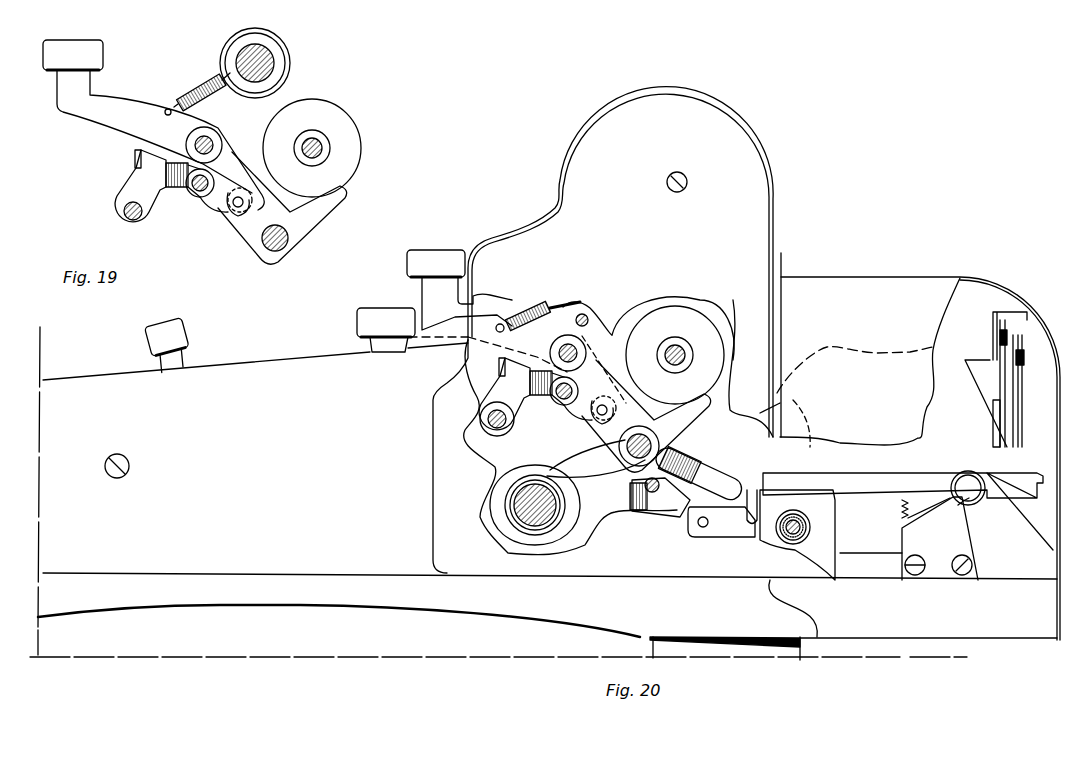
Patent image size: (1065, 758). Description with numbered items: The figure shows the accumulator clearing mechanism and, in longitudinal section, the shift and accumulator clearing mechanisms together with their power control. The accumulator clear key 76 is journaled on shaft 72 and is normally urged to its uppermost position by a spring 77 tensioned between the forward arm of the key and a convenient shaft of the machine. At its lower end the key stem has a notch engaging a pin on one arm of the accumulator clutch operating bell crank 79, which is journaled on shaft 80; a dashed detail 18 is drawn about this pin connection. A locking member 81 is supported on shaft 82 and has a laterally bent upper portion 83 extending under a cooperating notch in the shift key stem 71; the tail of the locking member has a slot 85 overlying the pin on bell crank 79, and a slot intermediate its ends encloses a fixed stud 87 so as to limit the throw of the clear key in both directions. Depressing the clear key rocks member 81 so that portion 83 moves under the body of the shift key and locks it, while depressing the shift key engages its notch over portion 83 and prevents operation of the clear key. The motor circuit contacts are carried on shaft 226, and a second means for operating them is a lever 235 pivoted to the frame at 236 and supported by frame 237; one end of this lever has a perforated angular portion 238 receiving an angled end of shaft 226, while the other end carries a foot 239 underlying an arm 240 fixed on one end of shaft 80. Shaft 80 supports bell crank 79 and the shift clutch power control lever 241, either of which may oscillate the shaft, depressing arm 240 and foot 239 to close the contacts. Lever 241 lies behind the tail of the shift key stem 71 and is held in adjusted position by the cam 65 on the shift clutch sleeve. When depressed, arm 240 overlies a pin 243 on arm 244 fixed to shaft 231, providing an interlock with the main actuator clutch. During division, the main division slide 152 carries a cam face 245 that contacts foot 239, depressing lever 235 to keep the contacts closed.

In FIG. 19, the accumulator clear key 76 is at (118, 106).
In FIG. 20, the accumulator clear key 76 is at (446, 305).
In FIG. 19, the spring 77 is at (192, 86).
In FIG. 19, the shaft 72 is at (215, 140).
In FIG. 19, the laterally bent upper portion 83 is at (134, 163).
In FIG. 19, the locking member 81 is at (128, 190).
In FIG. 20, the locking member 81 is at (535, 395).
In FIG. 19, the shaft 82 is at (125, 212).
In FIG. 19, the fixed stud 87 is at (196, 189).
In FIG. 19, the pin 18 is at (243, 198).
In FIG. 19, the slot 85 is at (236, 211).
In FIG. 19, the shaft 80 is at (262, 242).
In FIG. 20, the shaft 80 is at (665, 446).
In FIG. 19, the accumulator clutch operating bell crank 79 is at (314, 220).
In FIG. 20, the shift key stem 71 is at (410, 358).
In FIG. 20, the shift clutch power control lever 241 is at (604, 483).
In FIG. 20, the cam 65 is at (502, 495).
In FIG. 20, the arm 240 is at (698, 467).
In FIG. 20, the main division slide 152 is at (640, 512).
In FIG. 20, the cam face 245 is at (657, 495).
In FIG. 20, the pin 243 is at (687, 540).
In FIG. 20, the arm 244 is at (708, 520).
In FIG. 20, the foot 239 is at (713, 527).
In FIG. 20, the shaft 231 is at (797, 527).
In FIG. 20, the lever 235 is at (892, 493).
In FIG. 20, the shaft 226 is at (1003, 475).
In FIG. 20, the frame 237 is at (901, 508).
In FIG. 20, the pivot 236 is at (967, 500).
In FIG. 20, the perforated angular portion 238 is at (1030, 466).